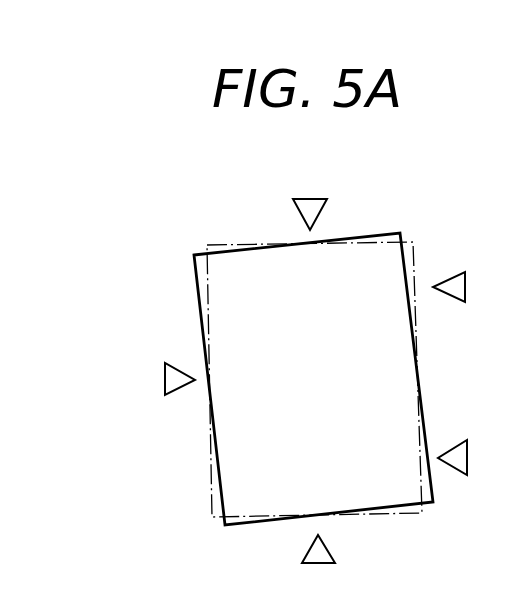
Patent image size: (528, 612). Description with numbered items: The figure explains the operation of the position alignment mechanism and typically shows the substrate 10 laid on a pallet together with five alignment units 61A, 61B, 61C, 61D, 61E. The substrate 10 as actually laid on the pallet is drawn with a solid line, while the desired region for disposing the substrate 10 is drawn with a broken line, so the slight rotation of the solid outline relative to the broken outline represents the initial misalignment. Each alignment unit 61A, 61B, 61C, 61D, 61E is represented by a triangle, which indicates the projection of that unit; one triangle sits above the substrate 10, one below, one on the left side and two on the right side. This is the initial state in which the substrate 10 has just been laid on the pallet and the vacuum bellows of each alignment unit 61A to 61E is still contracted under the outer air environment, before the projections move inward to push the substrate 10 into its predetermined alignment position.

The substrate 10 is at (415, 253).
The alignment unit 61A is at (317, 564).
The alignment unit 61B is at (472, 457).
The alignment unit 61C is at (469, 287).
The alignment unit 61D is at (308, 199).
The alignment unit 61E is at (156, 379).